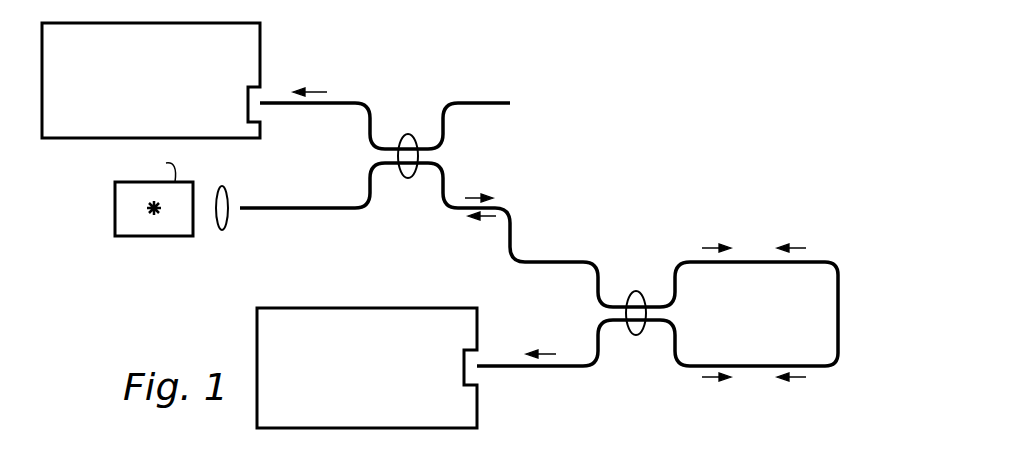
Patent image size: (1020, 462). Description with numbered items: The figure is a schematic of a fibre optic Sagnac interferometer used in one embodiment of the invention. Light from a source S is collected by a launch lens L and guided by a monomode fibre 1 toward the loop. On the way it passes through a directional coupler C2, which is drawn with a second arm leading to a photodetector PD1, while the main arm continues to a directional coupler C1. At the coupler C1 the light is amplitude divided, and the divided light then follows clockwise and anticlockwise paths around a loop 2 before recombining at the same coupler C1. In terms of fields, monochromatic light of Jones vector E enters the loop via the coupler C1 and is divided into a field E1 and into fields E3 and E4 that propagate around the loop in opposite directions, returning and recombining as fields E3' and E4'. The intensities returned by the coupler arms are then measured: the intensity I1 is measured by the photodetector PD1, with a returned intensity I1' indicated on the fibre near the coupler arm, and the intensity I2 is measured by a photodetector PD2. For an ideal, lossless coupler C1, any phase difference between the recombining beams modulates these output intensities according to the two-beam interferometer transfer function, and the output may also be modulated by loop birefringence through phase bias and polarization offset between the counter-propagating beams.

The photodetector PD1 is at (151, 80).
The photodetector PD2 is at (367, 368).
The source S is at (140, 236).
The launch lens L is at (227, 194).
The monomode fibre 1 is at (288, 210).
The loop 2 is at (840, 298).
The directional coupler C1 is at (635, 273).
The directional coupler C2 is at (400, 115).
The intensity I1 is at (310, 76).
The returned intensity I1' is at (482, 234).
The intensity I2 is at (541, 338).
The field E1 is at (480, 185).
The field E3 is at (716, 234).
The field E4 is at (716, 397).
The recombined field E3' is at (793, 397).
The recombined field E4' is at (792, 231).